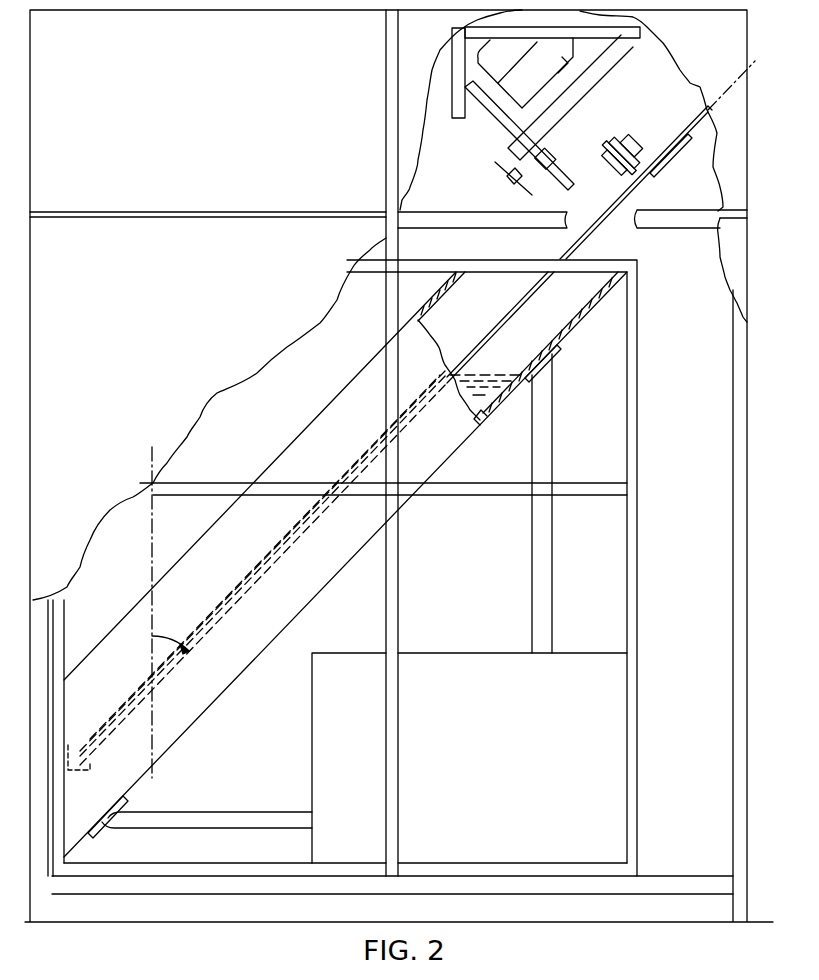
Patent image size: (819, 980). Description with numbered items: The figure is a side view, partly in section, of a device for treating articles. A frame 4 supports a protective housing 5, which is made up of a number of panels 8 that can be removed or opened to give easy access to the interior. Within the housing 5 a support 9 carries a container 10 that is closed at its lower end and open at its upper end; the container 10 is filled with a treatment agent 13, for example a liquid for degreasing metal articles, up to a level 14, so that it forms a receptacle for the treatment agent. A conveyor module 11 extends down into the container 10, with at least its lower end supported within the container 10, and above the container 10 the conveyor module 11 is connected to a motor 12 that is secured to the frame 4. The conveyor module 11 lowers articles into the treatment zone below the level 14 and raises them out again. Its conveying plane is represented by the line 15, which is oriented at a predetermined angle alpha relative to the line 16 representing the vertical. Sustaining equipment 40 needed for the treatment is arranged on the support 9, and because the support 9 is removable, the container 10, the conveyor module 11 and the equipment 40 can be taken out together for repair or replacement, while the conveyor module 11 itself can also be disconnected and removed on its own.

The frame 4 is at (399, 568).
The protective housing 5 is at (36, 326).
The panels 8 is at (228, 172).
The support 9 is at (632, 441).
The container 10 is at (285, 455).
The conveyor module 11 is at (651, 195).
The motor 12 is at (600, 103).
The treatment agent 13 is at (480, 407).
The level 14 is at (488, 377).
The line representing the conveying plane 15 is at (739, 75).
The line representing the vertical 16 is at (152, 458).
The sustaining equipment 40 is at (528, 760).